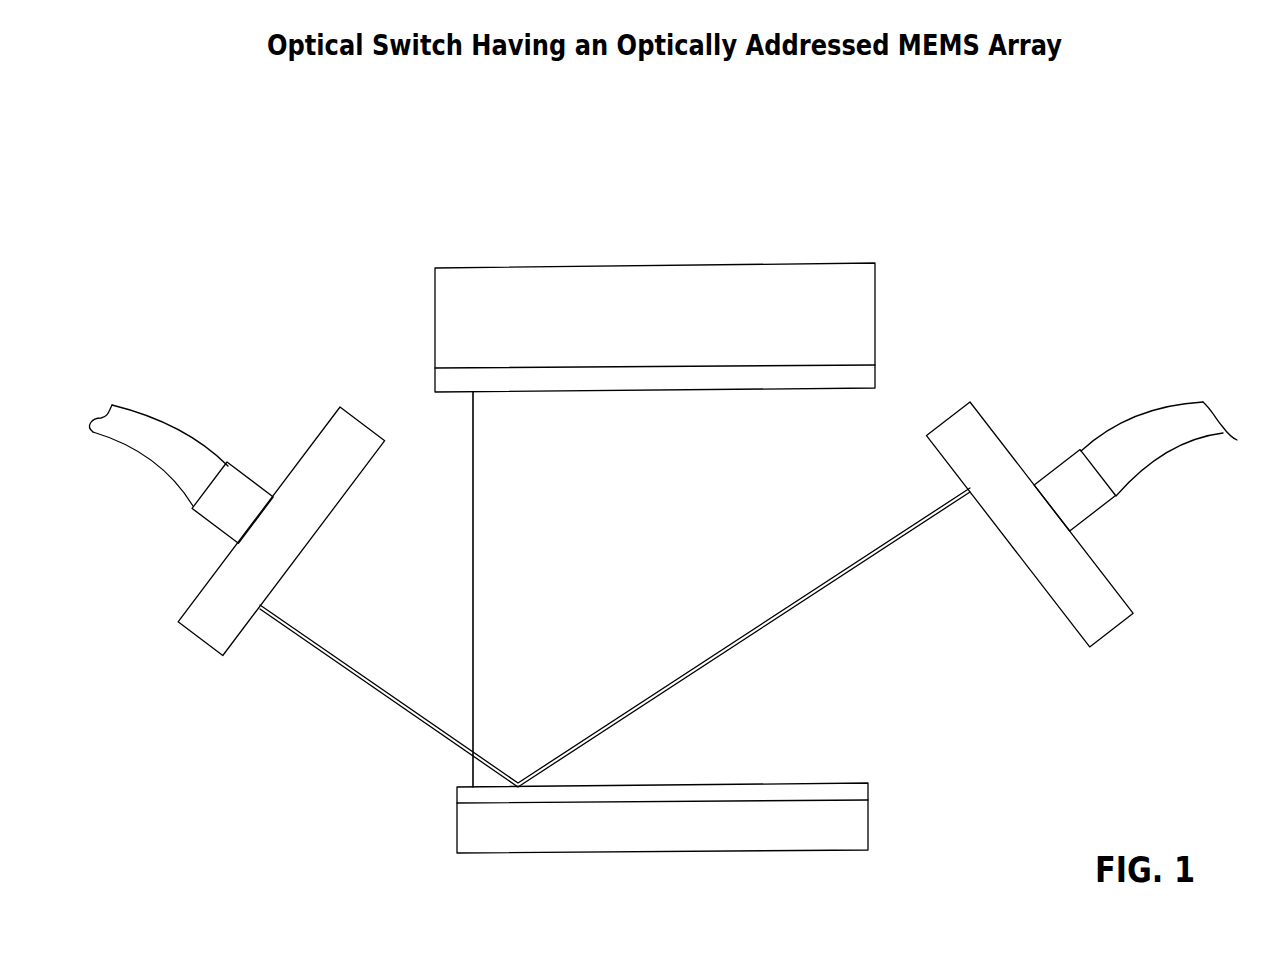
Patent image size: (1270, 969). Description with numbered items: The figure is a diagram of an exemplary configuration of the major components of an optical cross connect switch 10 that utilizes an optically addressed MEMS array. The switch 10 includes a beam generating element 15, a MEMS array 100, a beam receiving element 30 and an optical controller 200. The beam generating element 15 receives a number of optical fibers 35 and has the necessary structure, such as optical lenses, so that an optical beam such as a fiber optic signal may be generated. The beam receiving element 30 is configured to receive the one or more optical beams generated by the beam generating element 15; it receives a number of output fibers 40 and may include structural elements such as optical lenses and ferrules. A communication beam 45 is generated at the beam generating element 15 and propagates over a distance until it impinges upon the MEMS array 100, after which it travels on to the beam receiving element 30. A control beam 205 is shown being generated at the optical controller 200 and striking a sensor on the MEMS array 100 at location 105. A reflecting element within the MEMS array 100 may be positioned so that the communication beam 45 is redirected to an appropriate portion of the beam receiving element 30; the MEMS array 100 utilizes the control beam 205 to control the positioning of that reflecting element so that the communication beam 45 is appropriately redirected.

The optical cross connect switch 10 is at (281, 259).
The beam generating element 15 is at (200, 640).
The beam receiving element 30 is at (1108, 635).
The optical fibers 35 is at (163, 458).
The output fibers 40 is at (1143, 455).
The communication beam 45 is at (347, 675).
The MEMS array 100 is at (870, 834).
The location 105 is at (467, 784).
The optical controller 200 is at (732, 264).
The control beam 205 is at (473, 508).